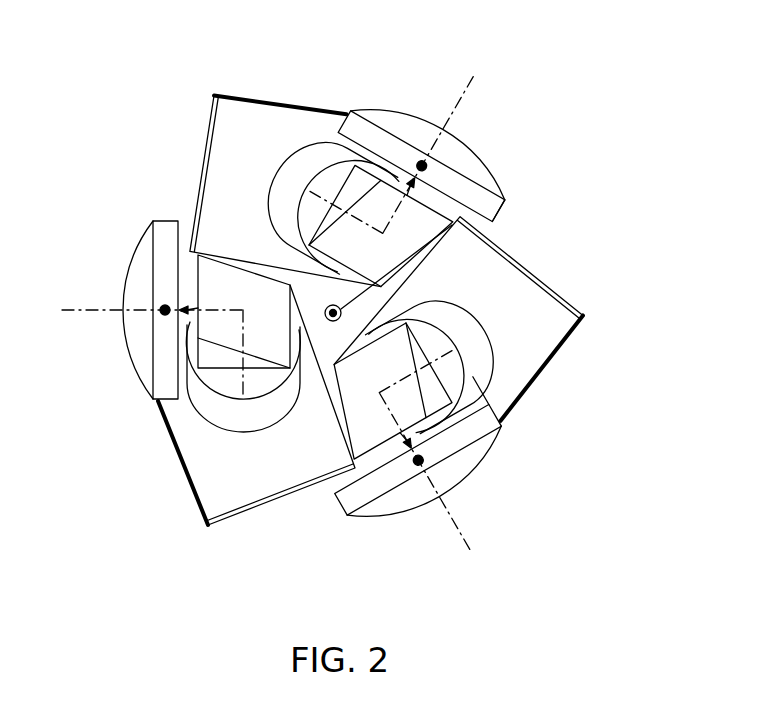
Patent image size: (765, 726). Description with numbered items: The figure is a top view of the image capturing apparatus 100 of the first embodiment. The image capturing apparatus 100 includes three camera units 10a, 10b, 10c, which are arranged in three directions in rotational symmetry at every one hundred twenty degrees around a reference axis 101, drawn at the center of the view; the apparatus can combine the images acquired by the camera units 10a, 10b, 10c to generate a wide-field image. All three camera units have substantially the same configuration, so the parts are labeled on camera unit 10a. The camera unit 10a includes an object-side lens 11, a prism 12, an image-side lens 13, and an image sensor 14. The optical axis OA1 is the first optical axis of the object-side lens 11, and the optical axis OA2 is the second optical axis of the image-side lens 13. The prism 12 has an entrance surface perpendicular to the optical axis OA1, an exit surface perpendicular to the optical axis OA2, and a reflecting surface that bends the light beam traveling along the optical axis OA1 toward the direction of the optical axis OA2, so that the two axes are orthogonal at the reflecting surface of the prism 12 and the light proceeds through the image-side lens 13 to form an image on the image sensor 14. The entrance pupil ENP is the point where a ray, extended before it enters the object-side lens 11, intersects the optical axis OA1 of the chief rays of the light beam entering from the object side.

The image capturing apparatus 100 is at (589, 101).
The reference axis 101 is at (495, 198).
The camera unit 10a is at (617, 336).
The camera unit 10b is at (188, 478).
The camera unit 10c is at (291, 104).
The object-side lens 11 is at (468, 498).
The prism 12 is at (473, 458).
The image-side lens 13 is at (475, 372).
The image sensor 14 is at (531, 378).
The optical axis OA1 is at (460, 518).
The optical axis OA2 is at (440, 352).
The entrance pupil ENP is at (388, 479).